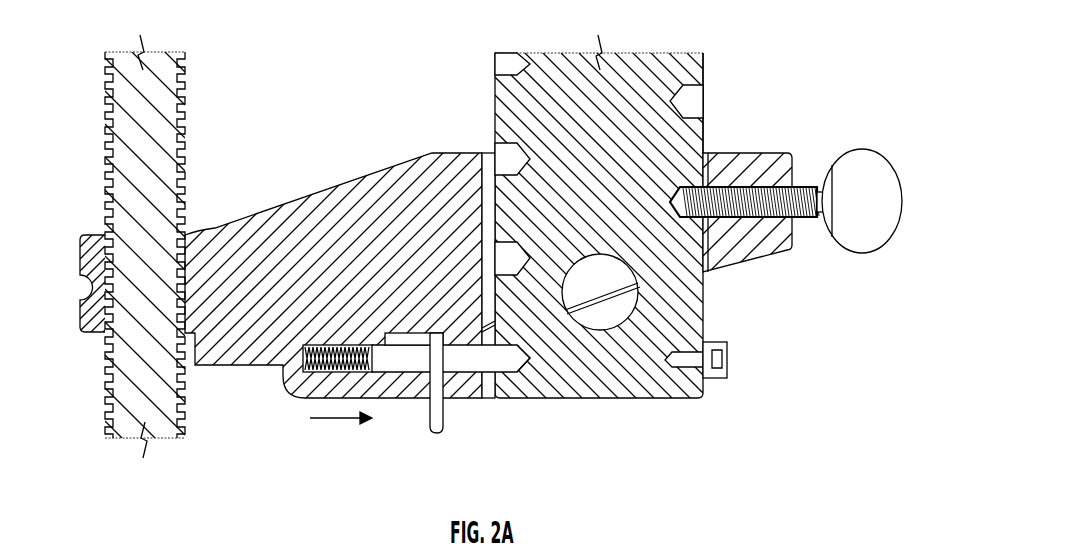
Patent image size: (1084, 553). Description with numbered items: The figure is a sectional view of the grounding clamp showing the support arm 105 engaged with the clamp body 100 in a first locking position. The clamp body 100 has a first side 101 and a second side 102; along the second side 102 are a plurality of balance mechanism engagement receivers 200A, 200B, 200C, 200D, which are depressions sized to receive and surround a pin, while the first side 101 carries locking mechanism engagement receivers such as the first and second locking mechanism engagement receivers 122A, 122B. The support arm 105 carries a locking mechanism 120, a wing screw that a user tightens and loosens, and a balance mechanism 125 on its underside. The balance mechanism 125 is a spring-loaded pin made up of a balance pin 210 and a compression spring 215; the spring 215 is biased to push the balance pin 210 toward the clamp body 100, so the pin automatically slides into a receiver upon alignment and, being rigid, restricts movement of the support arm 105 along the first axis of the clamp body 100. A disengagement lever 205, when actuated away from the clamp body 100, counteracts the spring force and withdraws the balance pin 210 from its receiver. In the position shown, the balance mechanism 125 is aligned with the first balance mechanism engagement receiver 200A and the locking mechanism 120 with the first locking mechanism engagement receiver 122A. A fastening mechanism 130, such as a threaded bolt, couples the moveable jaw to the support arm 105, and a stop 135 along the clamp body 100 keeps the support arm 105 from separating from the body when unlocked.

The clamp body 100 is at (601, 200).
The first side of the clamp body 101 is at (703, 65).
The second side of the clamp body 102 is at (497, 105).
The support arm 105 is at (250, 290).
The locking mechanism 120 is at (870, 258).
The first locking mechanism engagement receiver 122A is at (690, 183).
The second locking mechanism engagement receiver 122B is at (690, 100).
The balance mechanism 125 is at (410, 310).
The fastening mechanism 130 is at (125, 157).
The stop 135 is at (727, 358).
The first balance mechanism engagement receiver 200A is at (513, 378).
The second balance mechanism engagement receiver 200B is at (525, 262).
The third balance mechanism engagement receiver 200C is at (505, 160).
The balance mechanism engagement receiver 200D is at (508, 65).
The disengagement lever 205 is at (433, 440).
The balance pin 210 is at (452, 378).
The compression spring 215 is at (345, 335).